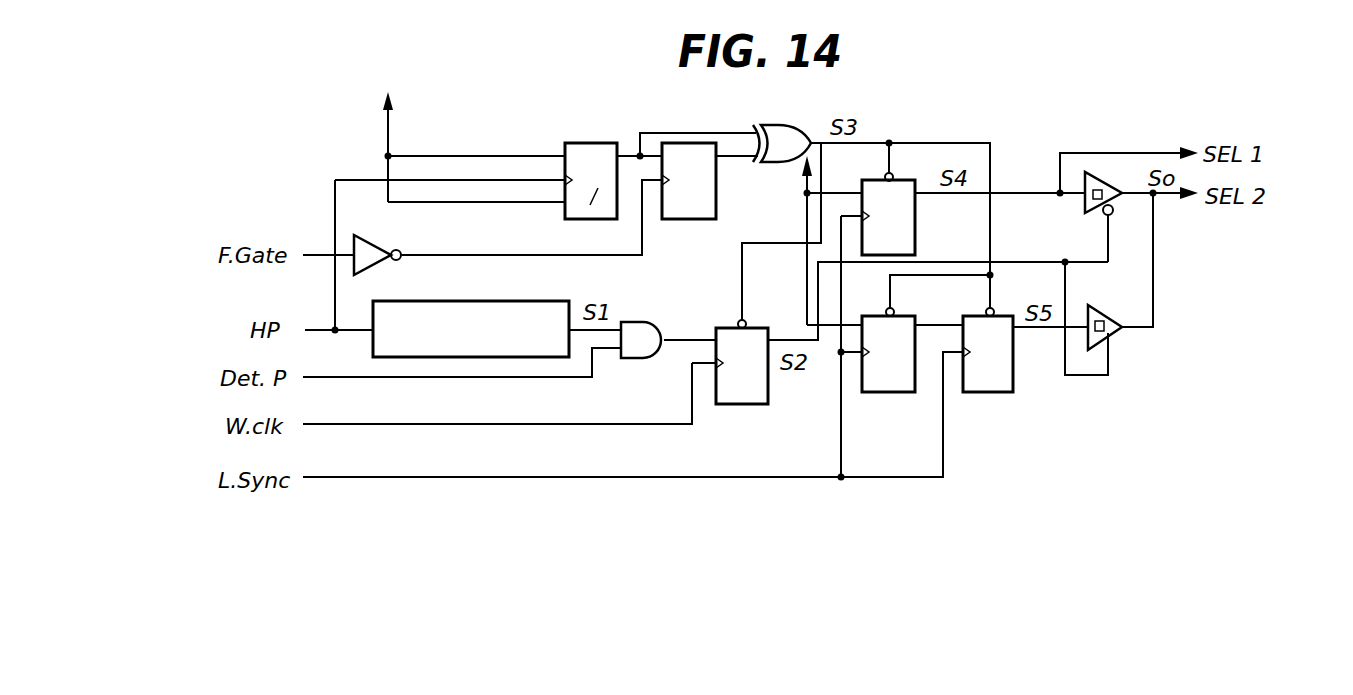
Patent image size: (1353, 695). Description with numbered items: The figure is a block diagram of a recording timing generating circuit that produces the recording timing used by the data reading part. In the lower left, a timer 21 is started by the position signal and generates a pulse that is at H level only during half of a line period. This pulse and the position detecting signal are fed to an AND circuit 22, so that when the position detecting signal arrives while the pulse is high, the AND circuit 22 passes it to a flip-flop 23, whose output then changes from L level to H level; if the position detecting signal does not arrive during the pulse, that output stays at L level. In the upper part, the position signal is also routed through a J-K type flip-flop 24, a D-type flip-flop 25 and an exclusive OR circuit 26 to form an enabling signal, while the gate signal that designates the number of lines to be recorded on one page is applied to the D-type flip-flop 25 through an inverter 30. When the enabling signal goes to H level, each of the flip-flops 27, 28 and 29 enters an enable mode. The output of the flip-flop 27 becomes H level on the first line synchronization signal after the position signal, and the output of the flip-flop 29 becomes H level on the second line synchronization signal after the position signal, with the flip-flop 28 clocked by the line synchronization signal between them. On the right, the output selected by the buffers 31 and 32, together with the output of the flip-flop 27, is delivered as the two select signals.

The timer 21 is at (445, 300).
The AND circuit 22 is at (640, 312).
The flip-flop 23 is at (748, 408).
The J-K type flip-flop 24 is at (580, 140).
The D-type flip-flop 25 is at (715, 181).
The exclusive OR circuit 26 is at (780, 126).
The flip-flop 27 is at (913, 240).
The flip-flop 28 is at (888, 395).
The flip-flop 29 is at (992, 395).
The inverter 30 is at (364, 236).
The buffer 31 is at (1080, 214).
The buffer 32 is at (1120, 335).